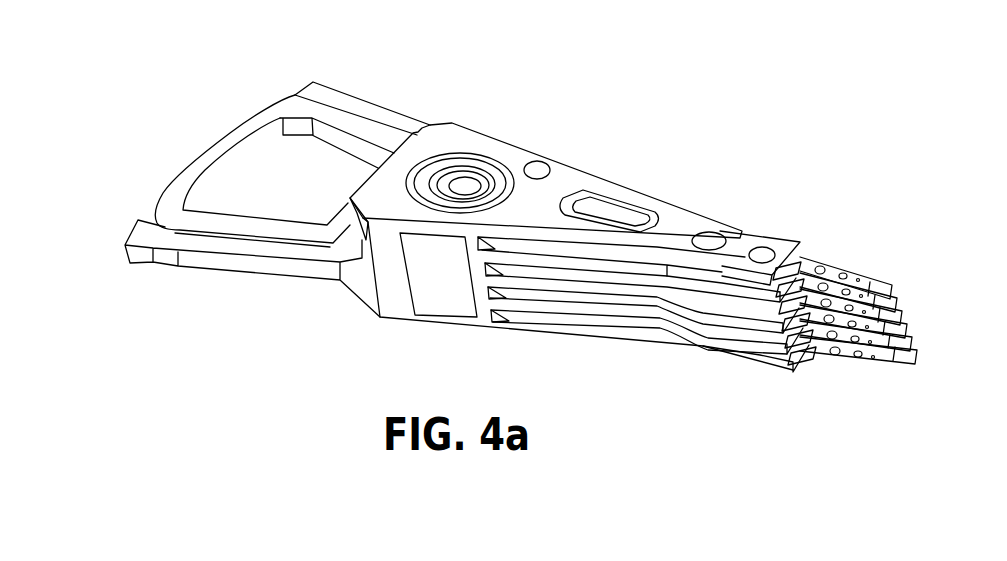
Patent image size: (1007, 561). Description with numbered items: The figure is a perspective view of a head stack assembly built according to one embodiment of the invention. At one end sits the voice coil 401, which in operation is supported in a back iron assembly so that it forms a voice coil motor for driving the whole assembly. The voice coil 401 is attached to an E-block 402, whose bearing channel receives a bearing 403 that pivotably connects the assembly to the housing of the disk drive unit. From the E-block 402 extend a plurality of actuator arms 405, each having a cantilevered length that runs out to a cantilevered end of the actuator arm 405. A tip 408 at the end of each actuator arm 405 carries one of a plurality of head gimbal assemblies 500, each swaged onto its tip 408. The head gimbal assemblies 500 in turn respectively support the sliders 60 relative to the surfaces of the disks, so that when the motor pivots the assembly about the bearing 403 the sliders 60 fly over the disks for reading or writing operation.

The voice coil 401 is at (217, 138).
The E-block 402 is at (455, 135).
The bearing 403 is at (463, 188).
The actuator arms 405 is at (742, 360).
The tip 408 is at (785, 245).
The head gimbal assemblies 500 is at (810, 268).
The sliders 60 is at (887, 288).